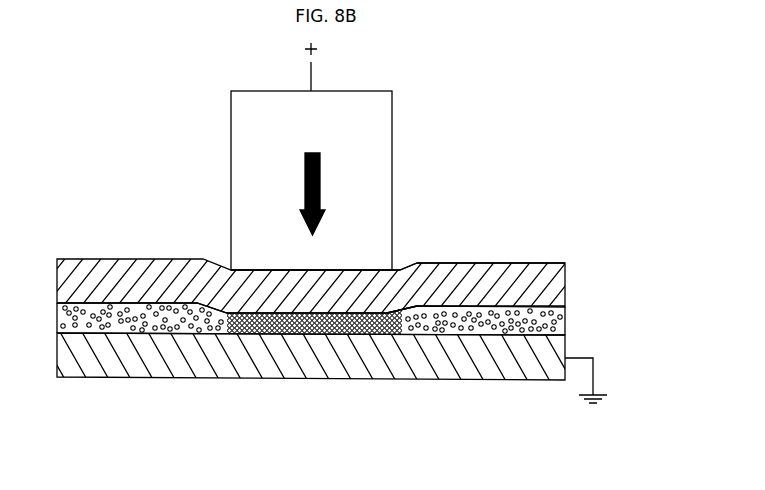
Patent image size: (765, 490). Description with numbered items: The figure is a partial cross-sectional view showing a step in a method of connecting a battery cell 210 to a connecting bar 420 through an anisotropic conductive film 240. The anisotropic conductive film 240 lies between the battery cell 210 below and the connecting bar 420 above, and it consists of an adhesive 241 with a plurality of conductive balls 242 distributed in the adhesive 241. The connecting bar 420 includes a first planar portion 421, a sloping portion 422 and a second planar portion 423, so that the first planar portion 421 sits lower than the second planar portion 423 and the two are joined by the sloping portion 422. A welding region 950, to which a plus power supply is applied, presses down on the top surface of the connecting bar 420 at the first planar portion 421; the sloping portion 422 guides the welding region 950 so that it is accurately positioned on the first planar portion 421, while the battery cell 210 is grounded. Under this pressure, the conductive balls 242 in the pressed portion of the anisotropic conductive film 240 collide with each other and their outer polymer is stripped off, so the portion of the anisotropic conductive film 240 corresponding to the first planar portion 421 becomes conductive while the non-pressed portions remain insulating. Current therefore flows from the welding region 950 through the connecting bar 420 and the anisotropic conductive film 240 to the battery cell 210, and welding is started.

The welding region 950 is at (393, 138).
The connecting bar 420 is at (552, 200).
The first planar portion 421 is at (332, 269).
The sloping portion 422 is at (402, 269).
The second planar portion 423 is at (478, 263).
The anisotropic conductive film 240 is at (311, 384).
The adhesive 241 is at (163, 334).
The conductive balls 242 is at (200, 334).
The battery cell 210 is at (437, 365).